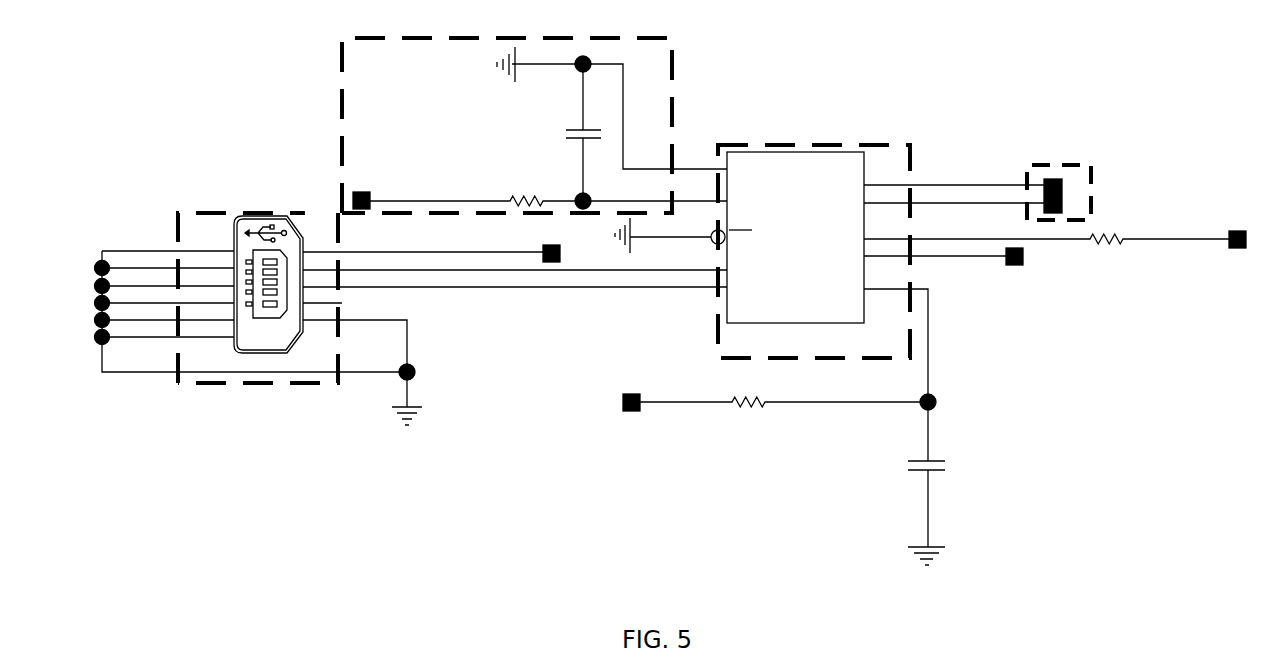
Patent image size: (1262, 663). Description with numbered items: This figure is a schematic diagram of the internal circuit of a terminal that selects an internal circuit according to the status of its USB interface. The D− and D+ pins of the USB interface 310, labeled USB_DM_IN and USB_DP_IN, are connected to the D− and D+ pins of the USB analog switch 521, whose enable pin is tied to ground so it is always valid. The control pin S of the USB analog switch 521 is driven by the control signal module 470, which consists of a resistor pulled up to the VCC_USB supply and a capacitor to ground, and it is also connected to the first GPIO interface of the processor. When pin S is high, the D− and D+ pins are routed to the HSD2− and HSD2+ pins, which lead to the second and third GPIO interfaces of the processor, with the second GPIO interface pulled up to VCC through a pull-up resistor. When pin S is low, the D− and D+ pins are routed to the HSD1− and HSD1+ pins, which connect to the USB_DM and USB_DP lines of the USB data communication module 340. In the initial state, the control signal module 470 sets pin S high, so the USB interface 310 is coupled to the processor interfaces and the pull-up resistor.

The USB interface 310 is at (258, 383).
The control signal module 470 is at (342, 130).
The USB analog switch 521 is at (912, 177).
The USB data communication module 340 is at (1053, 165).